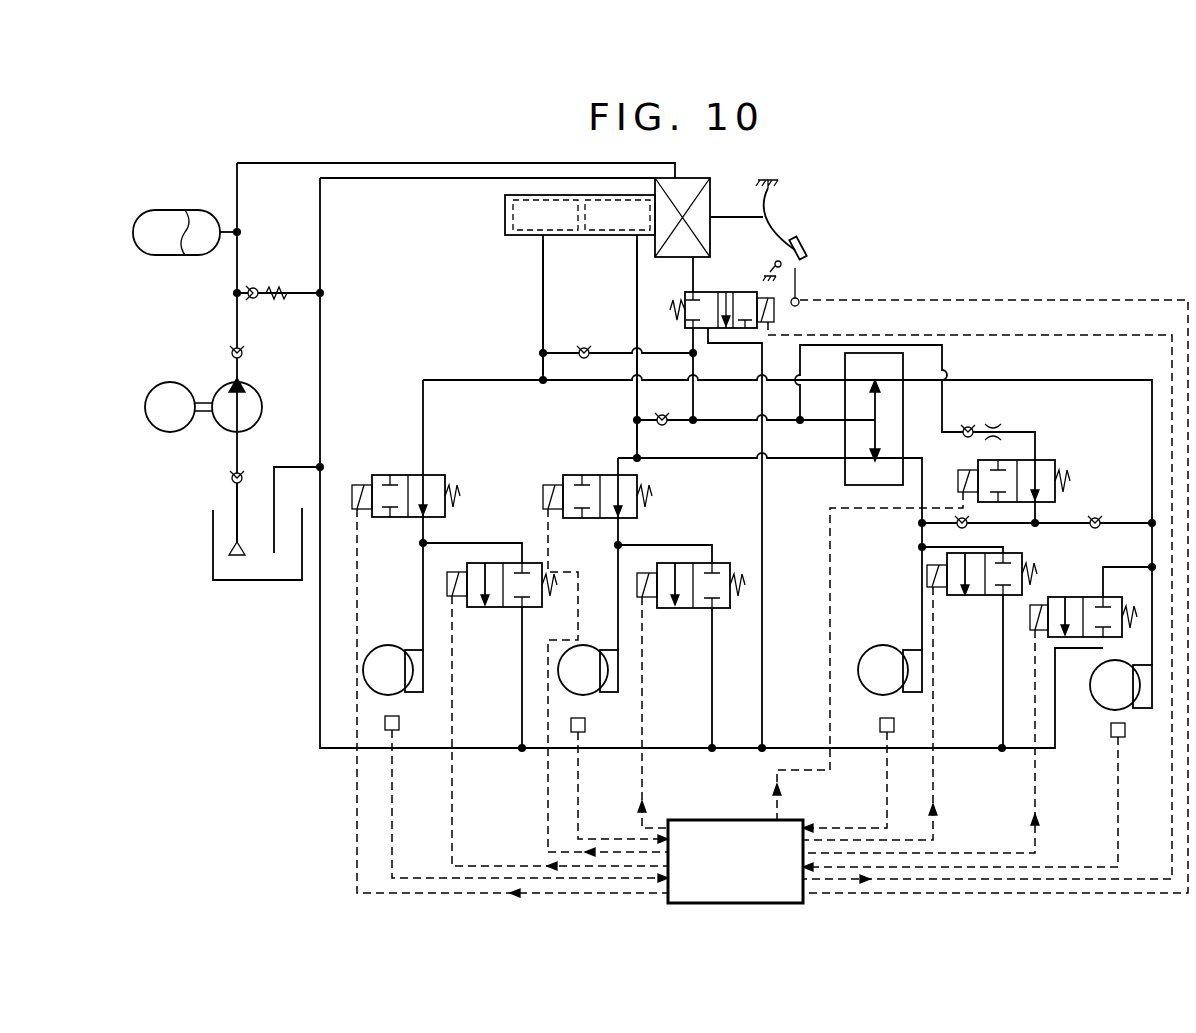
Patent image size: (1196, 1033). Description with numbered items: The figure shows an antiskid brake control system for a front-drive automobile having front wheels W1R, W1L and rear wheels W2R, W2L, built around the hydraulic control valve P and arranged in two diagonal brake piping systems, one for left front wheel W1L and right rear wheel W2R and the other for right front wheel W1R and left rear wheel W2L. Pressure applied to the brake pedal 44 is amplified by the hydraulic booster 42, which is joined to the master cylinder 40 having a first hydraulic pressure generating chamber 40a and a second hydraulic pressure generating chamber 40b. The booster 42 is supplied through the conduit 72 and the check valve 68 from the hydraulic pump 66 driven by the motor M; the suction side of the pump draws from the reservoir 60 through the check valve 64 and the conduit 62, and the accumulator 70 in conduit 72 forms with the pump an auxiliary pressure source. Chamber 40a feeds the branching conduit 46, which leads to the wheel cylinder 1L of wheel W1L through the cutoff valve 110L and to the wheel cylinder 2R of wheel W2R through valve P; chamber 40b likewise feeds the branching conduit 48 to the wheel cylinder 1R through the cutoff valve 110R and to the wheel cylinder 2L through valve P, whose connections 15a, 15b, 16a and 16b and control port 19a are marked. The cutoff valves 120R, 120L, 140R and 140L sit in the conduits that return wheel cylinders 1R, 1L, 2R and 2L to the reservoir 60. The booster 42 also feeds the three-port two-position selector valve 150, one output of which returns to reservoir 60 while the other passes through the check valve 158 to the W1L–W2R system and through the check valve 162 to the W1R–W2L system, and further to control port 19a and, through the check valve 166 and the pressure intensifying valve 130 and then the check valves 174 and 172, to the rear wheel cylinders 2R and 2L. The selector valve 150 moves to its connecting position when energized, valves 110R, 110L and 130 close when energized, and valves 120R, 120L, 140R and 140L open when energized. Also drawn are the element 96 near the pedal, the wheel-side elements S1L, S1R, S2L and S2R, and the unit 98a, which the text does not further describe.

The accumulator 70 is at (182, 210).
The conduit 72 is at (410, 163).
The check valve 68 is at (236, 347).
The motor-driven hydraulic pump 66 is at (226, 379).
The electric motor M is at (178, 407).
The check valve 64 is at (233, 475).
The conduit 62 is at (235, 505).
The reservoir 60 is at (213, 568).
The master cylinder 40 is at (546, 242).
The first hydraulic pressure generating chamber 40a is at (520, 228).
The second hydraulic pressure generating chamber 40b is at (600, 230).
The branching conduit 46 is at (543, 293).
The branching conduit 48 is at (637, 300).
The check valve 158 is at (584, 348).
The check valve 162 is at (667, 424).
The hydraulic booster 42 is at (714, 196).
The brake pedal 44 is at (802, 246).
The brake switch 96 is at (802, 300).
The selector valve 150 is at (712, 292).
The hydraulic control valve P is at (876, 425).
The inlet port 15a is at (845, 380).
The control port 19a is at (845, 420).
The inlet port 15b is at (848, 463).
The outlet port 16a is at (903, 385).
The outlet port 16b is at (904, 458).
The check valve 166 is at (970, 427).
The pressure intensifying valve 130 is at (1050, 460).
The check valve 174 is at (1095, 518).
The check valve 172 is at (967, 526).
The cutoff valve 110L is at (400, 475).
The cutoff valve 110R is at (590, 475).
The cutoff valve 120L is at (489, 607).
The cutoff valve 120R is at (685, 608).
The cutoff valve 140L is at (975, 595).
The cutoff valve 140R is at (1075, 597).
The left front wheel W1L is at (374, 652).
The right front wheel W1R is at (590, 690).
The left rear wheel W2L is at (870, 655).
The right rear wheel W2R is at (1097, 698).
The wheel cylinder 1L is at (412, 650).
The wheel cylinder 1R is at (605, 650).
The wheel cylinder 2L is at (912, 660).
The wheel cylinder 2R is at (1142, 700).
The front left wheel speed sensor S1L is at (399, 723).
The front right wheel speed sensor S1R is at (578, 732).
The rear left wheel speed sensor S2L is at (880, 725).
The rear right wheel speed sensor S2R is at (1118, 737).
The electronic control unit 98a is at (750, 820).